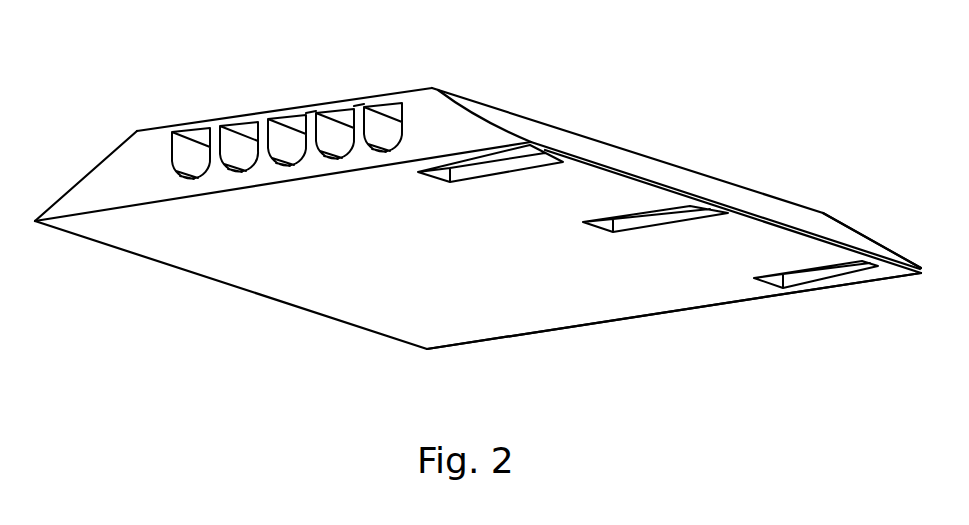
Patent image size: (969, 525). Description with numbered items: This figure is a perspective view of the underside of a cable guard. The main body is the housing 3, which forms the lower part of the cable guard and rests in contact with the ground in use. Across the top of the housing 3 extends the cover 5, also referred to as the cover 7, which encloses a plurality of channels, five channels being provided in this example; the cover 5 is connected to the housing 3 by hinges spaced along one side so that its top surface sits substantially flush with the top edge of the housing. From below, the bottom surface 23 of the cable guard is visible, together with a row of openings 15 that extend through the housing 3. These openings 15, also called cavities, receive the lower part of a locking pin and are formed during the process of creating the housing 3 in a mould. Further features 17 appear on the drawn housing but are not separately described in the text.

The housing 3 is at (418, 100).
The cover 5 is at (337, 105).
The cover 7 is at (108, 185).
The openings 15 is at (536, 156).
The U-shaped cutout 17 is at (262, 133).
The bottom surface 23 is at (623, 315).